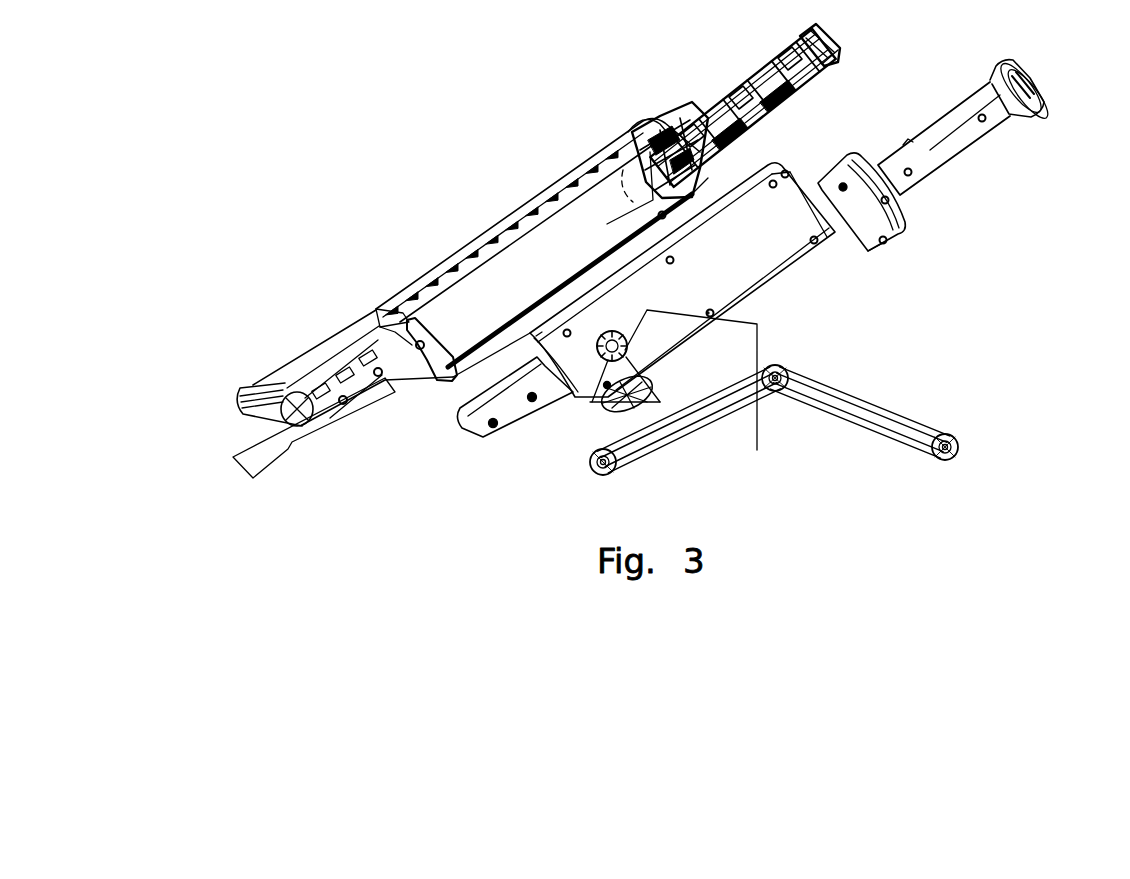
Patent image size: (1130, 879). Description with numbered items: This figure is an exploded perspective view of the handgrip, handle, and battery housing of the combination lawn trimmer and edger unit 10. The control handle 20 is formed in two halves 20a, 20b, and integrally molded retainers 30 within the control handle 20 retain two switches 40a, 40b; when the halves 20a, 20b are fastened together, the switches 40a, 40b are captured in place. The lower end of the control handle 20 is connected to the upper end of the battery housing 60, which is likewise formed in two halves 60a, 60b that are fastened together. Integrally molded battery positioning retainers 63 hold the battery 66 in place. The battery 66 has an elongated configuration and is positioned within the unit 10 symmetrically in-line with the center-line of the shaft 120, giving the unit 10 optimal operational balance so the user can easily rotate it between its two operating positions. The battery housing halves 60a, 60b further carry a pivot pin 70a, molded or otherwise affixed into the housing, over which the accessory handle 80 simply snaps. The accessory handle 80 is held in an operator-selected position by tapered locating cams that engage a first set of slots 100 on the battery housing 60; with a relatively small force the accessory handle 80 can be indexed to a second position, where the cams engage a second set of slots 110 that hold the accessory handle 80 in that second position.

The unit 10 is at (298, 188).
The control handle 20 is at (770, 107).
The control handle half 20a is at (970, 137).
The control handle half 20b is at (830, 93).
The retainers 30 is at (637, 123).
The switch 40a is at (683, 113).
The switch 40b is at (703, 157).
The battery housing 60 is at (773, 228).
The battery housing half 60a is at (715, 283).
The battery housing half 60b is at (590, 152).
The battery positioning retainers 63 is at (477, 244).
The battery 66 is at (560, 233).
The pivot pin 70a is at (633, 403).
The accessory handle 80 is at (928, 422).
The first set of slots 100 is at (757, 452).
The second set of slots 110 is at (628, 342).
The shaft 120 is at (263, 455).